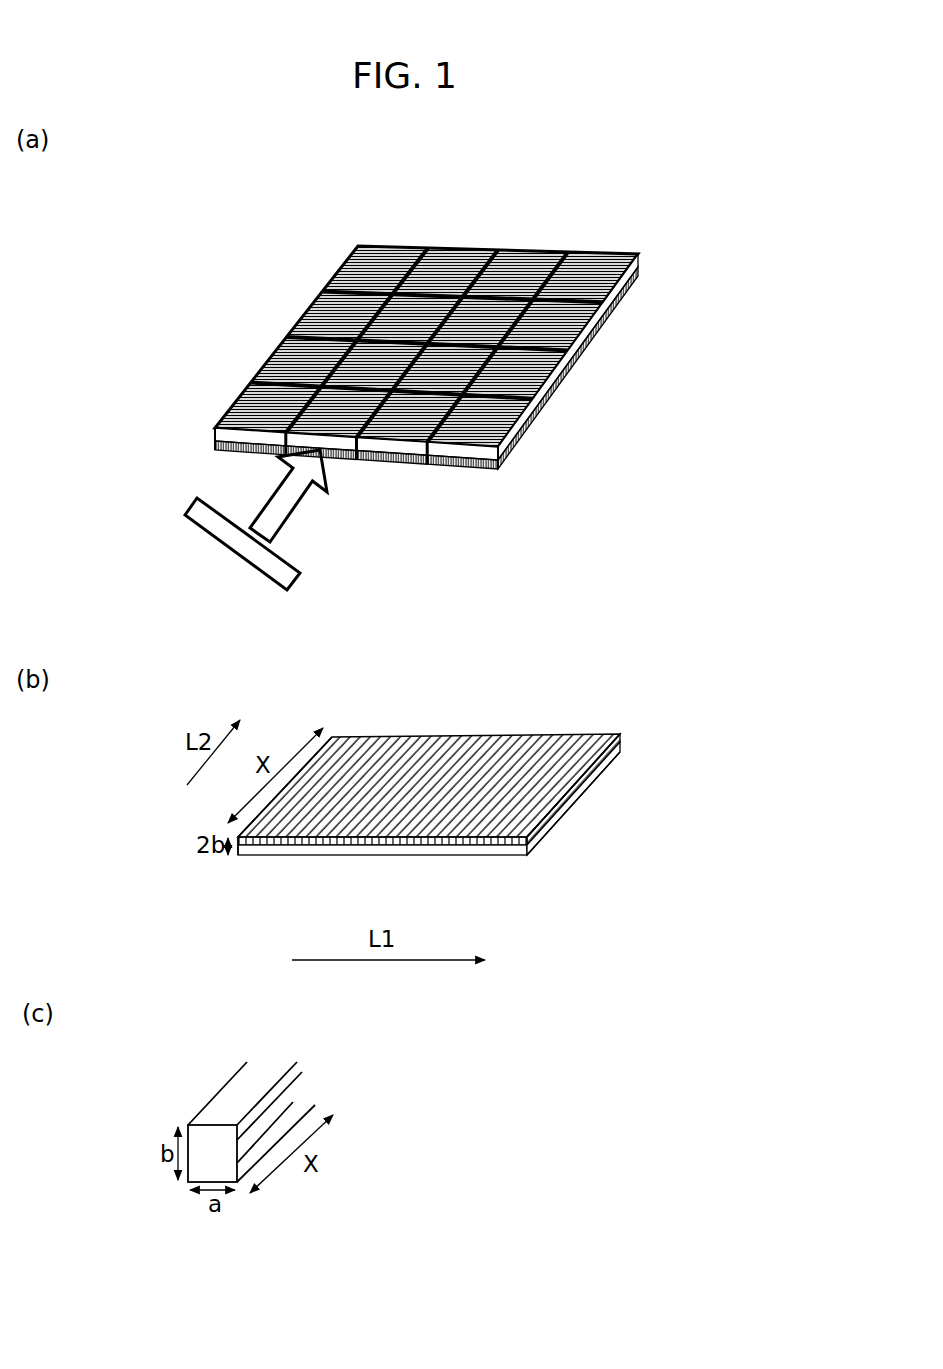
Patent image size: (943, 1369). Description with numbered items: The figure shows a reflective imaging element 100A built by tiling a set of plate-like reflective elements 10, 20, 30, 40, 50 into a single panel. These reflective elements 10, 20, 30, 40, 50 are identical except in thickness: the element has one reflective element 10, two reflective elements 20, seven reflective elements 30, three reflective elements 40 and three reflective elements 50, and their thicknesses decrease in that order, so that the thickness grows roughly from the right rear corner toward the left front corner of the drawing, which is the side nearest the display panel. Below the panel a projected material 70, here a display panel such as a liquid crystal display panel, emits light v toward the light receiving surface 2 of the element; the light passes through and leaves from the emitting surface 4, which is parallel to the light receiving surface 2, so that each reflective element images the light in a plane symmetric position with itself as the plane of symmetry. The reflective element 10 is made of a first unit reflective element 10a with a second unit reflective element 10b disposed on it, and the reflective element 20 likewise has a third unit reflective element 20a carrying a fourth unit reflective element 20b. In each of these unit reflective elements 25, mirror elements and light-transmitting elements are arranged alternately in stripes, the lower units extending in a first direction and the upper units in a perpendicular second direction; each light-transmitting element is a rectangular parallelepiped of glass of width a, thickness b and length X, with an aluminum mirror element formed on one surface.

The reflective imaging element 100A is at (410, 334).
The light receiving surface 2 is at (228, 455).
The emitting surface 4 is at (240, 410).
The reflective element 10 is at (220, 407).
The first unit reflective element 10a is at (215, 447).
The second unit reflective element 10b is at (215, 436).
The reflective element 20 is at (309, 414).
The third unit reflective element 20a is at (345, 452).
The fourth unit reflective element 20b is at (325, 455).
The reflective element 30 is at (378, 356).
The reflective element 40 is at (474, 324).
The reflective element 50 is at (602, 272).
The projected material (display panel) 70 is at (295, 575).
The light v is at (270, 503).
The unit reflective element 25 is at (528, 788).